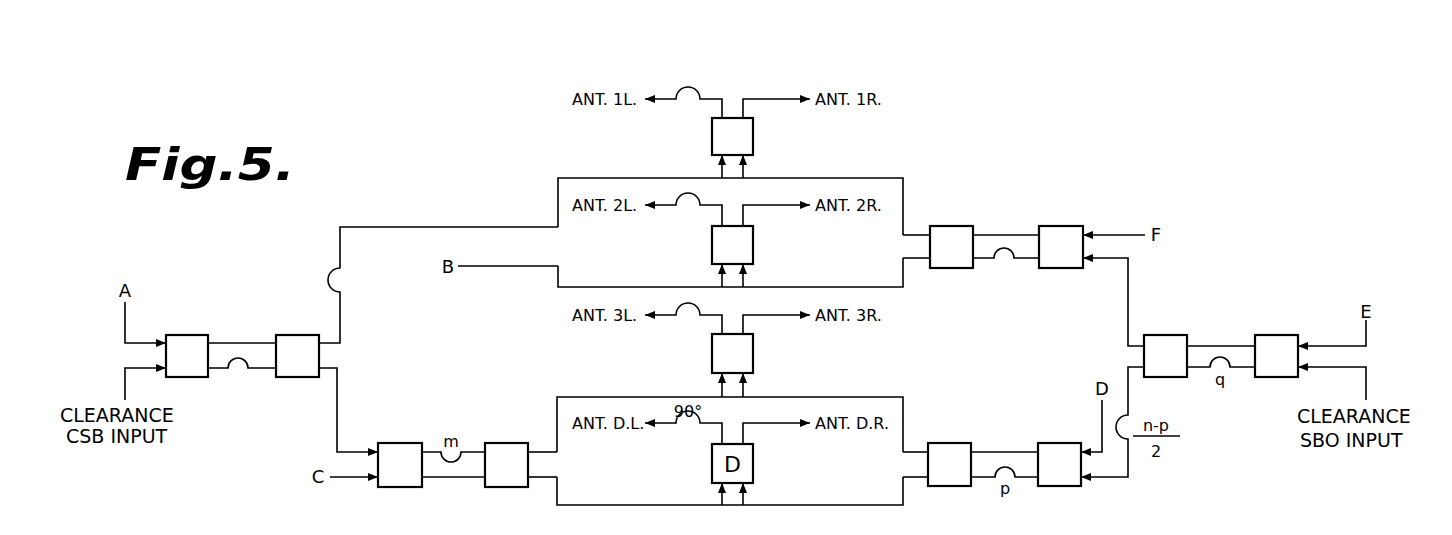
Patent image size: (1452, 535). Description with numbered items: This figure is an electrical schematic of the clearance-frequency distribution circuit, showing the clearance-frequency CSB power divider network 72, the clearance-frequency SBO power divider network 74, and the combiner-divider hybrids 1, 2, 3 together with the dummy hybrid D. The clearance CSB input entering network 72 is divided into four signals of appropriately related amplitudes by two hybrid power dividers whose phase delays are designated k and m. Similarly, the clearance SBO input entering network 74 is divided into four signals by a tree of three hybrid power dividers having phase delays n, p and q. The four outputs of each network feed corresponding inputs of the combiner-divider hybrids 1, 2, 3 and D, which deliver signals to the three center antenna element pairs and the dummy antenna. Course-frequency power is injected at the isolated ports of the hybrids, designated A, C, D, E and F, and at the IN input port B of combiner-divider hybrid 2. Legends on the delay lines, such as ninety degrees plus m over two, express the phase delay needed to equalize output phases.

The combiner-divider hybrid 1 is at (727, 128).
The combiner-divider hybrid 2 is at (727, 235).
The combiner-divider hybrid 3 is at (727, 345).
The clearance-frequency CSB power divider network 72 is at (437, 213).
The clearance-frequency SBO power divider network 74 is at (1010, 210).